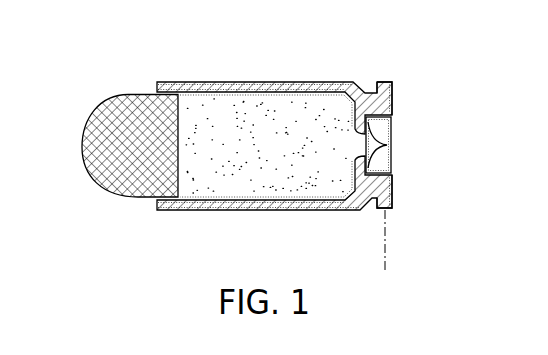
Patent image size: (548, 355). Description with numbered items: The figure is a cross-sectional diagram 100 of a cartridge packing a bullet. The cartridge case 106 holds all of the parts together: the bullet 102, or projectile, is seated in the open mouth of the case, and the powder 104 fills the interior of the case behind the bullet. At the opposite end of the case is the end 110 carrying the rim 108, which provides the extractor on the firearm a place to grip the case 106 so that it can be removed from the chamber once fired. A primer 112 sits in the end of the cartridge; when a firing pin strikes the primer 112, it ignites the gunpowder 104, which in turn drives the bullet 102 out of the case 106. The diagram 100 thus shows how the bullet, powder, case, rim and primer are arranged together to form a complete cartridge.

The cross-sectional diagram 100 is at (101, 241).
The bullet 102 is at (130, 117).
The powder 104 is at (255, 130).
The cartridge case 106 is at (344, 83).
The rim 108 is at (386, 263).
The end 110 is at (392, 101).
The primer 112 is at (392, 146).